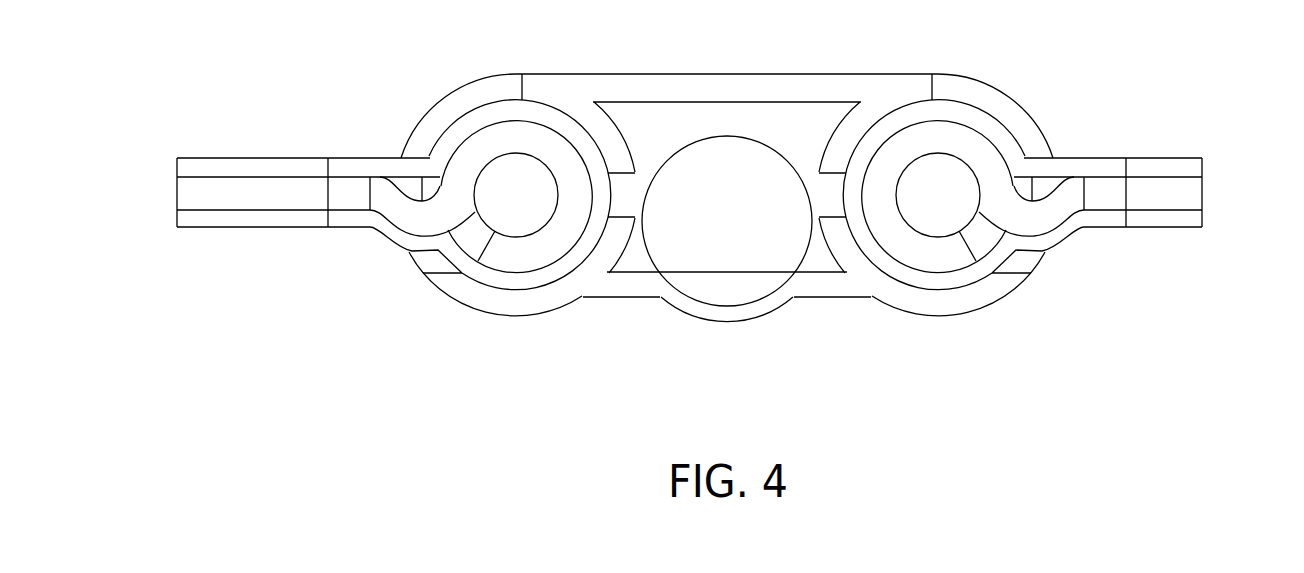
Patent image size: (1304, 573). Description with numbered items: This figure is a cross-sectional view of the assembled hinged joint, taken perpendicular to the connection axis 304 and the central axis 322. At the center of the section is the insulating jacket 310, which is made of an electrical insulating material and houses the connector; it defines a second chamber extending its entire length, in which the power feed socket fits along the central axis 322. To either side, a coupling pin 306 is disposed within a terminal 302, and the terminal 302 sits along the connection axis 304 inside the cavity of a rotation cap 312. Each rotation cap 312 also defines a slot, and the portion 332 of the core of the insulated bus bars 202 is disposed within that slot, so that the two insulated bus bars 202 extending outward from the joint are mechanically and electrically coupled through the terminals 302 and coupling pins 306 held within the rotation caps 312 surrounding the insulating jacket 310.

The insulated bus bars 202 is at (192, 197).
The terminal 302 is at (457, 160).
The connection axis 304 is at (517, 195).
The coupling pin 306 is at (502, 167).
The insulating jacket 310 is at (743, 323).
The rotation cap 312 is at (556, 112).
The central axis 322 is at (727, 223).
The portion of the core of the insulated bus bar 332 is at (348, 195).